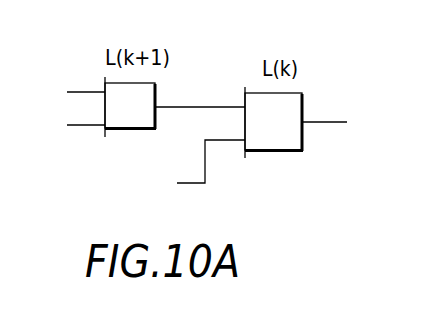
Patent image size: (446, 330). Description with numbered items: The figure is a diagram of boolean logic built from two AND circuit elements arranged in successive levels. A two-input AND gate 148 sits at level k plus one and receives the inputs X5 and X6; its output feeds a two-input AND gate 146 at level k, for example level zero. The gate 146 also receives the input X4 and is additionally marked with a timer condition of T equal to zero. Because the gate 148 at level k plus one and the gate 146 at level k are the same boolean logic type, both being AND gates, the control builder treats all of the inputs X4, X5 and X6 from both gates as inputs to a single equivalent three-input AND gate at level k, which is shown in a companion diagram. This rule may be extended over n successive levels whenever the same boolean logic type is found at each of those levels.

The two-input AND gate 148 is at (140, 132).
The two-input AND gate 146 is at (282, 152).
The input X4 is at (195, 183).
The input X5 is at (70, 93).
The input X6 is at (70, 127).